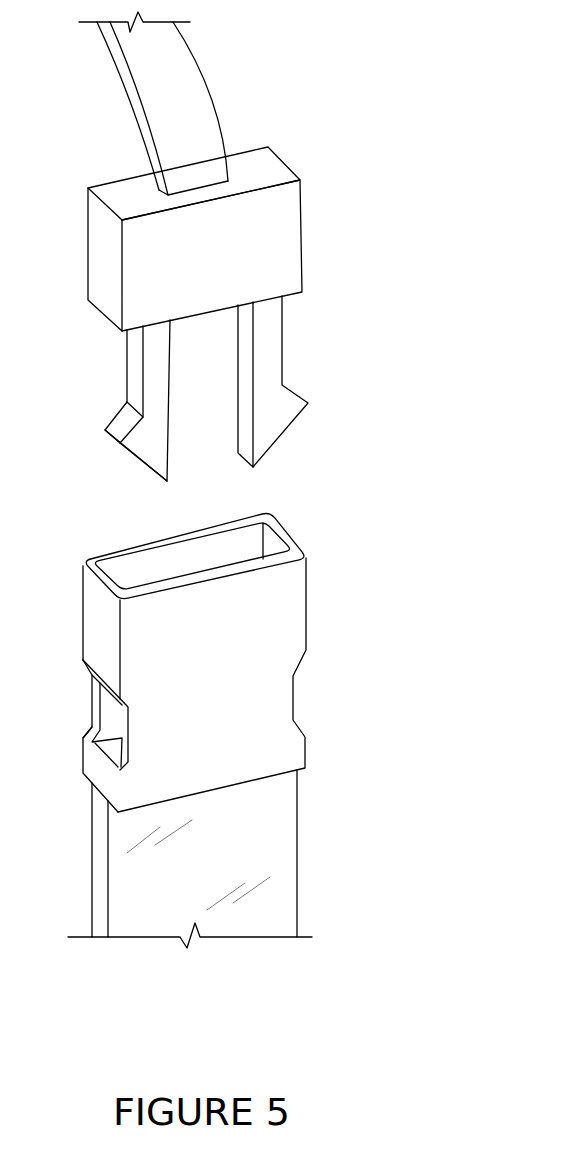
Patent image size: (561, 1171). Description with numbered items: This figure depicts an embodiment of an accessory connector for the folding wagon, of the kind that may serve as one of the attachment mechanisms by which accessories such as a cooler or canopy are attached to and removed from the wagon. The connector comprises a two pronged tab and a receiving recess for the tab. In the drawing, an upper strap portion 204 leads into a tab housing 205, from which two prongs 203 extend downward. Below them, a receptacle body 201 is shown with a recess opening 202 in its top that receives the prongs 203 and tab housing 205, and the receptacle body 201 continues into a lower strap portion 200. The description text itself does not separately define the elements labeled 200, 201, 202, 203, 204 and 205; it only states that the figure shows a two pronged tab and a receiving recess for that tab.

The strap (lower portion) 200 is at (272, 858).
The buckle body / receptacle 201 is at (270, 662).
The receptacle opening 202 is at (273, 545).
The latching prongs 203 is at (270, 363).
The strap (upper portion) 204 is at (175, 75).
The plug housing 205 is at (272, 228).